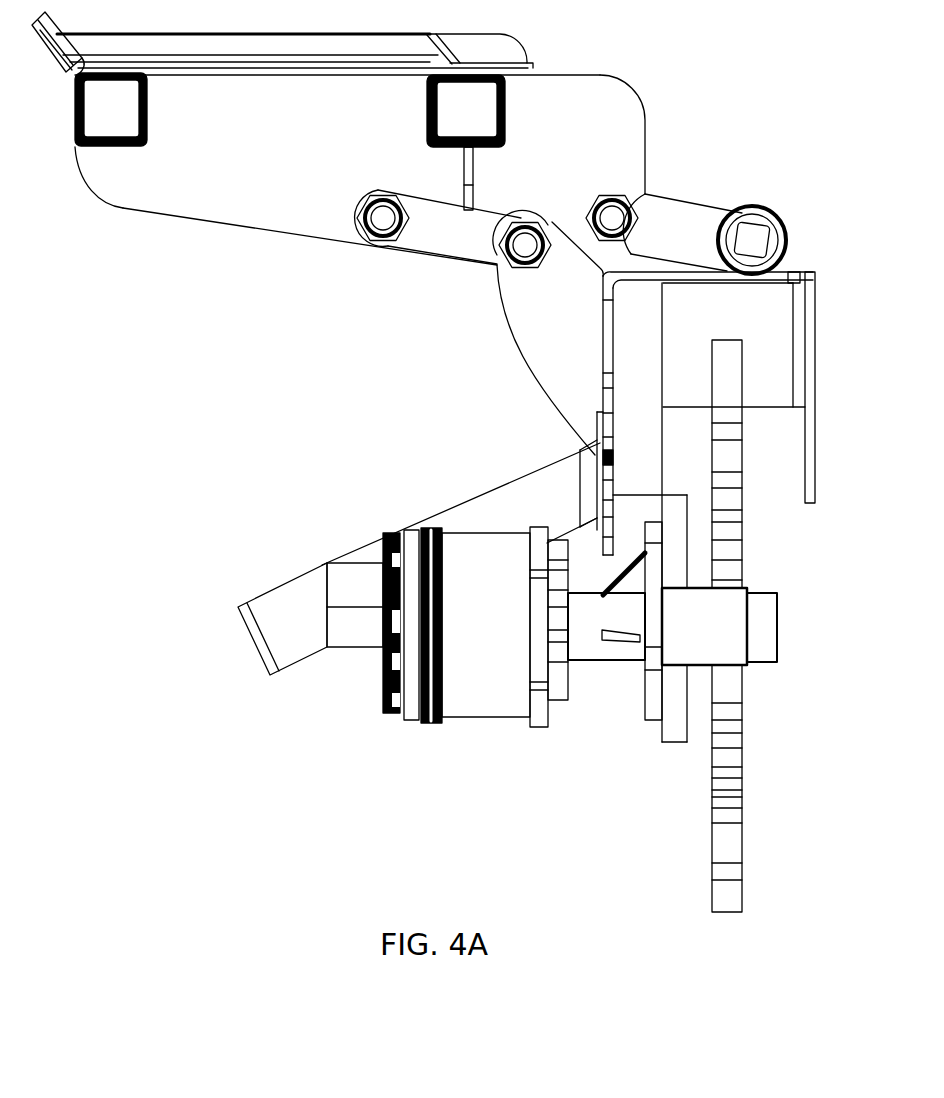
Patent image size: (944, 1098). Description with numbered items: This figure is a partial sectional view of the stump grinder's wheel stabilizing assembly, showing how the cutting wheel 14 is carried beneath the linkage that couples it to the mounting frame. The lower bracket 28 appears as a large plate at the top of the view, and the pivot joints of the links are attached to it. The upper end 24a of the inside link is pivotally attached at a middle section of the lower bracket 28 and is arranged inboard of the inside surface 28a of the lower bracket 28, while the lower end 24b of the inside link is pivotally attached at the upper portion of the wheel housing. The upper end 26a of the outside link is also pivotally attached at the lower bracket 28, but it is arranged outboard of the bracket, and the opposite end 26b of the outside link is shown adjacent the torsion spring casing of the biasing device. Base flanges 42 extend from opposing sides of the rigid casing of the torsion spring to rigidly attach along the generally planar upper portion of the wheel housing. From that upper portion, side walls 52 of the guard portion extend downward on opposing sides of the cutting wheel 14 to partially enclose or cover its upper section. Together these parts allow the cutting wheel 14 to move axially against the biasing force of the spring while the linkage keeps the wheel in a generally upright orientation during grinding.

The cutting wheel 14 is at (735, 760).
The upper end of the inside link 24a is at (357, 235).
The lower end of the inside link 24b is at (483, 263).
The upper end of the outside link 26a is at (655, 192).
The second arm pivot 26b is at (757, 210).
The lower bracket 28 is at (121, 210).
The inside surface of the lower bracket 28a is at (235, 205).
The base flanges 42 is at (797, 273).
The side walls 52 is at (603, 362).